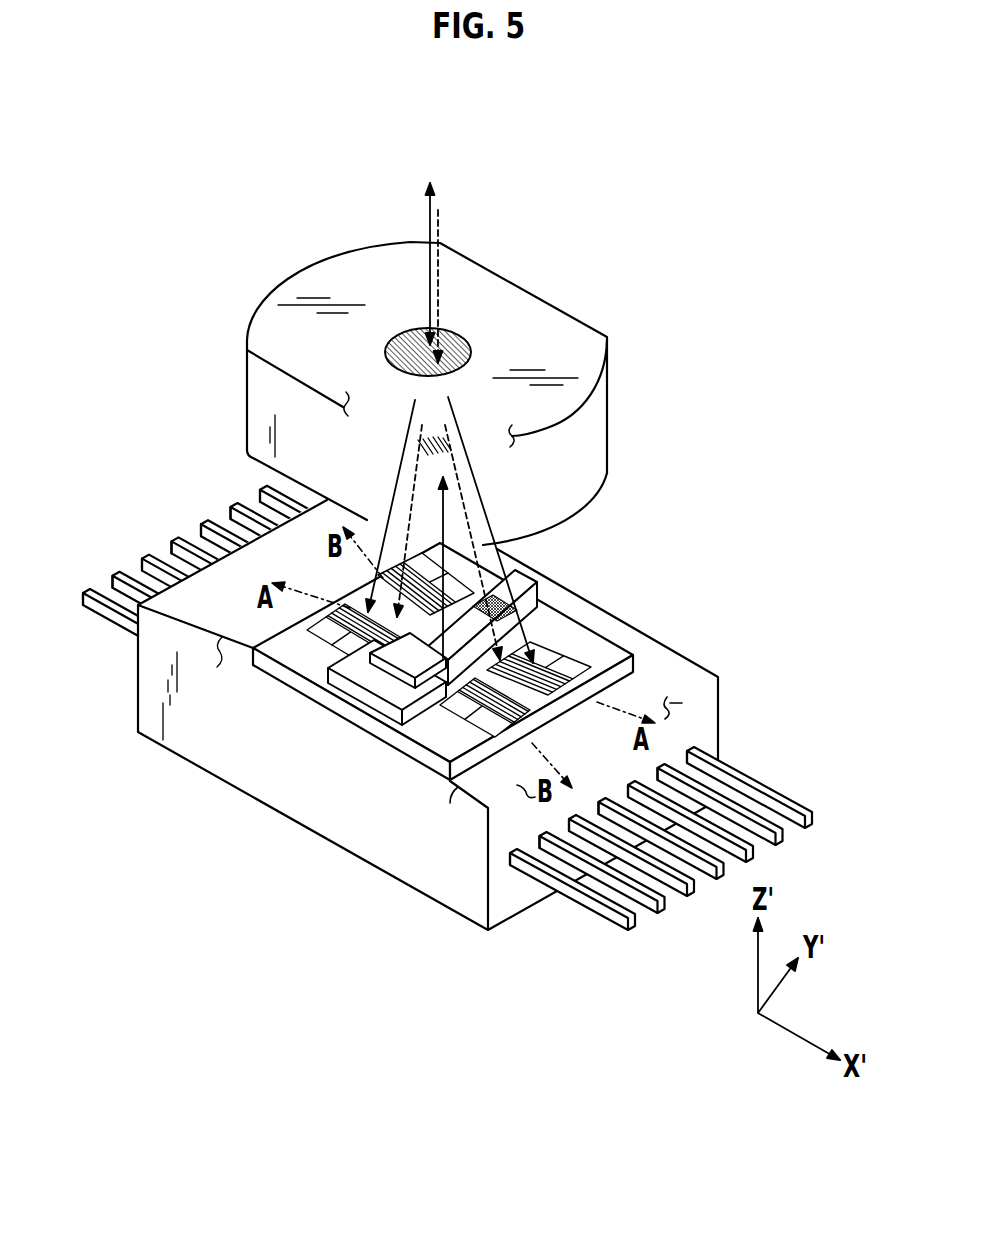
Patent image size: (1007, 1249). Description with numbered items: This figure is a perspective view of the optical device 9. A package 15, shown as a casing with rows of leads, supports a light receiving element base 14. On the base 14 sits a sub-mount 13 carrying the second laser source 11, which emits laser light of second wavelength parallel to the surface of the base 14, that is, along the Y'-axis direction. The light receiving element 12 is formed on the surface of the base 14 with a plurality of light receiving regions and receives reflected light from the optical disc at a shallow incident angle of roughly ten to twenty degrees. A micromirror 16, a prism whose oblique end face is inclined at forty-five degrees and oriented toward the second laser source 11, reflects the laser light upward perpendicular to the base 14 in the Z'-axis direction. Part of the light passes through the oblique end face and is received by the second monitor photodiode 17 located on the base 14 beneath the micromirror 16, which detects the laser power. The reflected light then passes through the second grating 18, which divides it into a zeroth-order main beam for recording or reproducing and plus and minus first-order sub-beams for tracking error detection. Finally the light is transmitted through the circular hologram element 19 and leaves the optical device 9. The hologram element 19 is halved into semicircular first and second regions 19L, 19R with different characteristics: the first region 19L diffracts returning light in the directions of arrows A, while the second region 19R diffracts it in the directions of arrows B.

The optical device 9 is at (623, 180).
The second laser source 11 is at (405, 650).
The light receiving element 12 is at (450, 660).
The sub-mount 13 is at (328, 663).
The light receiving element base 14 is at (573, 640).
The package 15 is at (458, 873).
The micromirror 16 is at (443, 738).
The second monitor photodiode 17 is at (490, 547).
The second grating 18 is at (437, 442).
The hologram element 19 is at (612, 210).
The first region 19L is at (405, 343).
The second region 19R is at (460, 343).